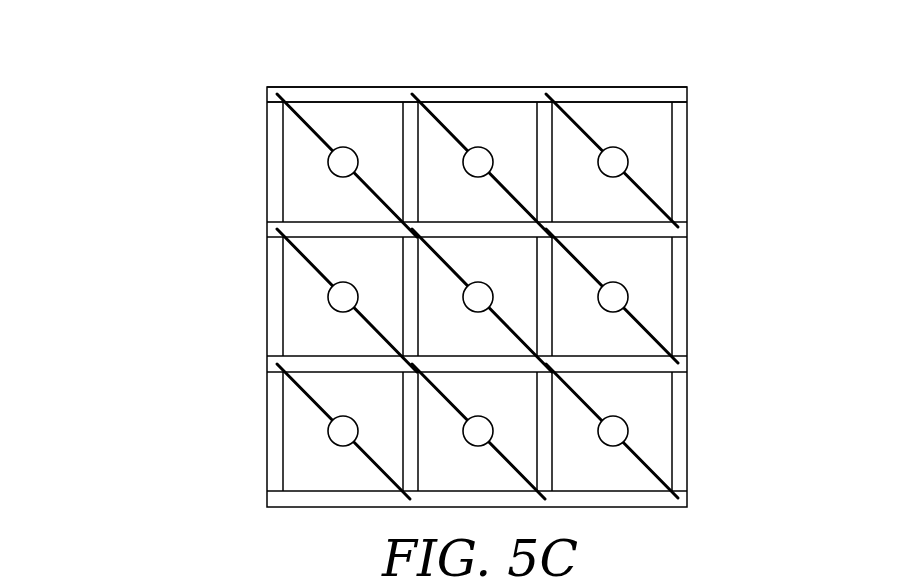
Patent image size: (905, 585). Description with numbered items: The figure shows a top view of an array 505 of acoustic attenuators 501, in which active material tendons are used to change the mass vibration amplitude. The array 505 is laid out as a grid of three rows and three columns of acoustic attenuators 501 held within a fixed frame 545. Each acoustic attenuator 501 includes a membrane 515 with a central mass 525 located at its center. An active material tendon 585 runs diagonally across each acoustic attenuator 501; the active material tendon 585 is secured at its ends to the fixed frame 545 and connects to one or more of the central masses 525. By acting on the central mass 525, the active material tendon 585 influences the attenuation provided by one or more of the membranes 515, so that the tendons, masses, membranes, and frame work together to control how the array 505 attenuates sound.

The acoustic attenuator 501 is at (690, 135).
The array 505 is at (449, 264).
The membrane 515 is at (637, 112).
The central mass 525 is at (620, 158).
The fixed frame 545 is at (573, 92).
The active material tendon 585 is at (660, 203).